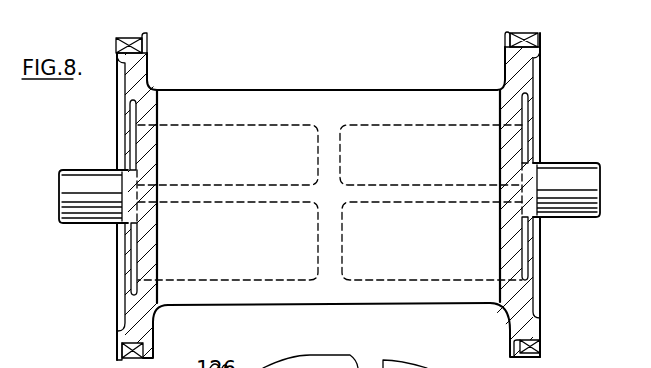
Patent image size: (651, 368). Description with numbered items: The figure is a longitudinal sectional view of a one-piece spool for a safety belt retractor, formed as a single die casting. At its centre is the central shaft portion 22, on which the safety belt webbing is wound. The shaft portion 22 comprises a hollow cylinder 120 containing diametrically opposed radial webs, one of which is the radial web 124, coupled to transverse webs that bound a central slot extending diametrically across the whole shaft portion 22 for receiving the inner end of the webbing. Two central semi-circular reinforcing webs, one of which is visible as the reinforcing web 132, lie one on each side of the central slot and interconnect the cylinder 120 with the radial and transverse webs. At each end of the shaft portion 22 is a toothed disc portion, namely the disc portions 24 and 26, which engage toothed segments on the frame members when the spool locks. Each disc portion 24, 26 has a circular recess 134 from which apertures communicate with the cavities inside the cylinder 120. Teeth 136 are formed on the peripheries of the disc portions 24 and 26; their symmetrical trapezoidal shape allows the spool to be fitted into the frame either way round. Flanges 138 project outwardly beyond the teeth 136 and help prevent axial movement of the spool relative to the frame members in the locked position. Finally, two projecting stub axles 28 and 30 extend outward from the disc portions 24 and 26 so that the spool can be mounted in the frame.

The central shaft portion 22 is at (251, 87).
The toothed disc 24 is at (150, 57).
The toothed disc 26 is at (505, 53).
The projecting stub axle 28 is at (98, 224).
The projecting stub axle 30 is at (577, 205).
The hollow cylinder 120 is at (407, 90).
The radial web 124 is at (422, 187).
The semi-circular reinforcing web 132 is at (340, 150).
The circular recess 134 is at (128, 140).
The teeth 136 is at (124, 38).
The flange 138 is at (147, 34).